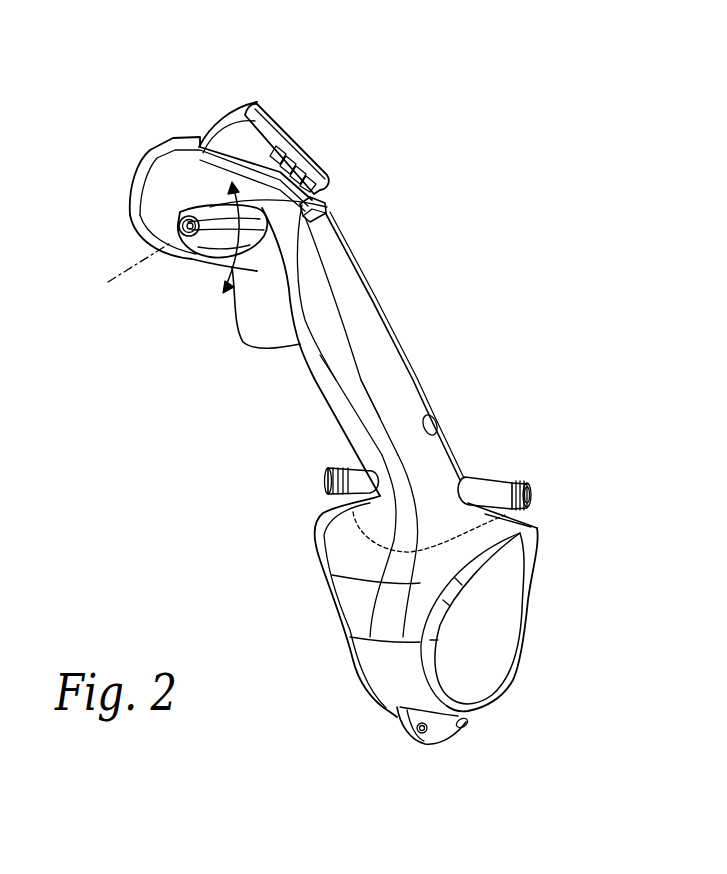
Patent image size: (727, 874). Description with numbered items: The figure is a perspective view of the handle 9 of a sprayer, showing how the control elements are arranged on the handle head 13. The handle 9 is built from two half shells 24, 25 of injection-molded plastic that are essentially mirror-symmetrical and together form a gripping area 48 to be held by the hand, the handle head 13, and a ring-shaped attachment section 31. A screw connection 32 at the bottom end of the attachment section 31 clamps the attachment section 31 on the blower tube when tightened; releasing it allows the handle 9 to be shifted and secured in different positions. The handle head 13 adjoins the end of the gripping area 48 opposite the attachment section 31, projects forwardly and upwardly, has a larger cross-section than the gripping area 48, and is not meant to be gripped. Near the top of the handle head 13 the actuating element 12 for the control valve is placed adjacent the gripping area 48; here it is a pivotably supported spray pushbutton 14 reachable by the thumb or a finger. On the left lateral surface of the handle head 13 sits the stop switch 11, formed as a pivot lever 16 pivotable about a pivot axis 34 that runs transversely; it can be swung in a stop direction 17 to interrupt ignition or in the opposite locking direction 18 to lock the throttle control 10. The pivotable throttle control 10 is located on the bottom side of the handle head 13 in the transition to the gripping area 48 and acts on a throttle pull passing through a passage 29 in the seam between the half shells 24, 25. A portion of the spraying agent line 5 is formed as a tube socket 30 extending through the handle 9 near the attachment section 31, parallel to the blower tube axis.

The spraying agent line 5 is at (534, 493).
The handle 9 is at (397, 297).
The throttle control 10 is at (263, 331).
The stop switch 11 is at (206, 211).
The actuating element 12 is at (303, 147).
The handle head 13 is at (162, 195).
The spray pushbutton 14 is at (310, 158).
The pivot lever 16 is at (215, 241).
The stop direction 17 is at (250, 262).
The locking direction 18 is at (320, 199).
The half shell 24 is at (347, 377).
The half shell 25 is at (406, 354).
The passage 29 is at (435, 430).
The tube socket 30 is at (490, 487).
The attachment section 31 is at (383, 662).
The screw connection 32 is at (412, 731).
The pivot axis 34 is at (124, 271).
The gripping area 48 is at (367, 391).